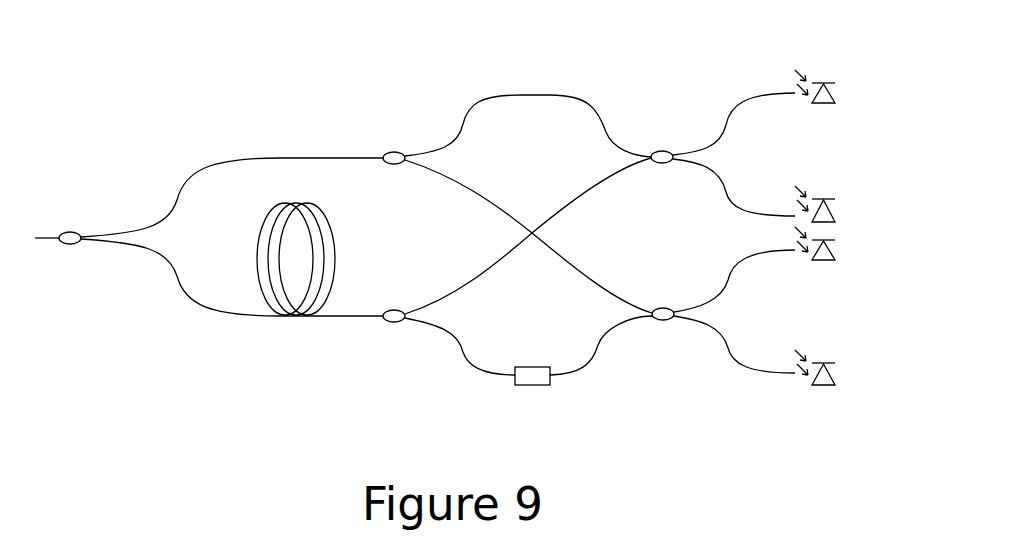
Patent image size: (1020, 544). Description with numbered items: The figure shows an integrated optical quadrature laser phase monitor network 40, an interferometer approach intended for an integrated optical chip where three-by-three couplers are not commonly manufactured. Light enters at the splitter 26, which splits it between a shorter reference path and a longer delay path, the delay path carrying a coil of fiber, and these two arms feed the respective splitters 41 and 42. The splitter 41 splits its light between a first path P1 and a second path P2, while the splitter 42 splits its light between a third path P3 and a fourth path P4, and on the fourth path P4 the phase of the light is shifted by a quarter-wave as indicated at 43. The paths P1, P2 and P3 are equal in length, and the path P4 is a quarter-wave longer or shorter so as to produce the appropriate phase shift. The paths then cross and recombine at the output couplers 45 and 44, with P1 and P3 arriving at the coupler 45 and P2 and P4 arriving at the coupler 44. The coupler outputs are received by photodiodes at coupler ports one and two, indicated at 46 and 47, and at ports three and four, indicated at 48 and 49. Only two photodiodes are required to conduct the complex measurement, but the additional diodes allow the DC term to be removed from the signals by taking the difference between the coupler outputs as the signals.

The optical receiver / interferometric detection system 40 is at (138, 52).
The splitter 26 is at (71, 232).
The splitter 41 is at (398, 152).
The splitter 42 is at (393, 310).
The quarter-wave phase shift 43 is at (524, 367).
The optical coupler (lower output combiner) 44 is at (657, 308).
The optical coupler (upper output combiner) 45 is at (663, 151).
The coupler port 1 46 is at (836, 91).
The coupler port 2 47 is at (836, 207).
The coupler port 3 48 is at (836, 248).
The coupler port 4 49 is at (836, 372).
The first path P1 is at (528, 110).
The second path P2 is at (528, 236).
The third path P3 is at (528, 236).
The fourth path P4 is at (528, 345).